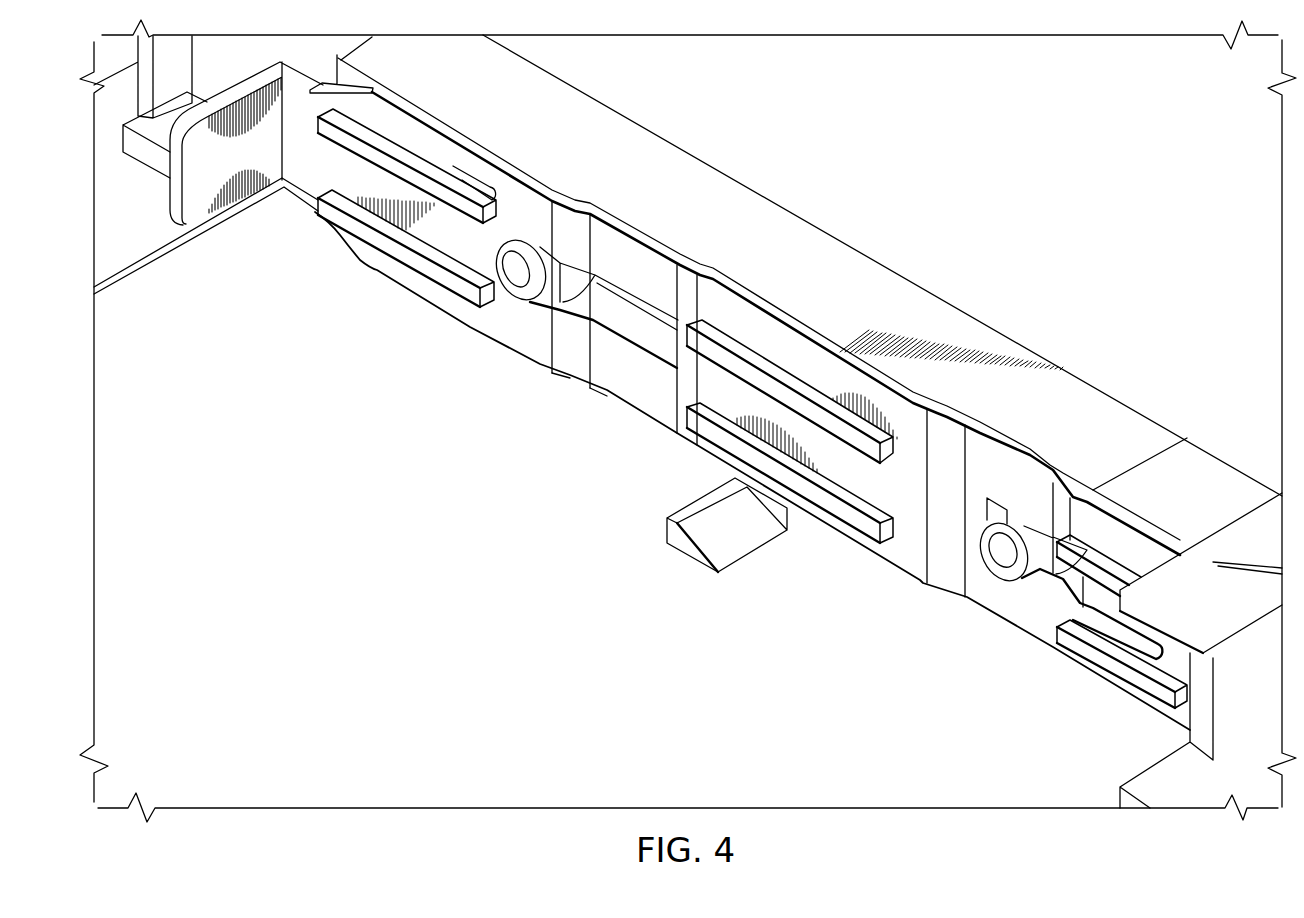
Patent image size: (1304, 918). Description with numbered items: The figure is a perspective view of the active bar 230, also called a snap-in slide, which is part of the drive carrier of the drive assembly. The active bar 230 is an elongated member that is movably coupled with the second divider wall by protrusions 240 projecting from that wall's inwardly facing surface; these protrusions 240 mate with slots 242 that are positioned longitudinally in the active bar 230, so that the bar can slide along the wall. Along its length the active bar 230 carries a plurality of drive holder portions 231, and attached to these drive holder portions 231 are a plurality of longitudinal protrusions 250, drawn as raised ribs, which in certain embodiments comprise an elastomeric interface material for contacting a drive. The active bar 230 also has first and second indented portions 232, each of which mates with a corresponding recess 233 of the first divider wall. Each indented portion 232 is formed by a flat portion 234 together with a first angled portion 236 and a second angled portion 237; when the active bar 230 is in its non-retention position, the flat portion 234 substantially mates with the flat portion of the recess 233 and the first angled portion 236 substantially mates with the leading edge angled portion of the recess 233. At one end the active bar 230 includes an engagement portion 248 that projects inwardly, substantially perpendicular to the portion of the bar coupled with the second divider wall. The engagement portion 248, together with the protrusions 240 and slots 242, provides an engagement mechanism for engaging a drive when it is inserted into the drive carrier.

The active bar 230 is at (430, 306).
The drive holder portions 231 is at (503, 152).
The indented portions 232 is at (543, 458).
The recess 233 is at (707, 168).
The flat portion 234 is at (635, 392).
The first angled portion 236 is at (570, 367).
The second angled portion 237 is at (685, 436).
The protrusions 240 is at (710, 268).
The slots 242 is at (572, 190).
The engagement portion 248 is at (243, 90).
The longitudinal protrusions 250 is at (410, 160).